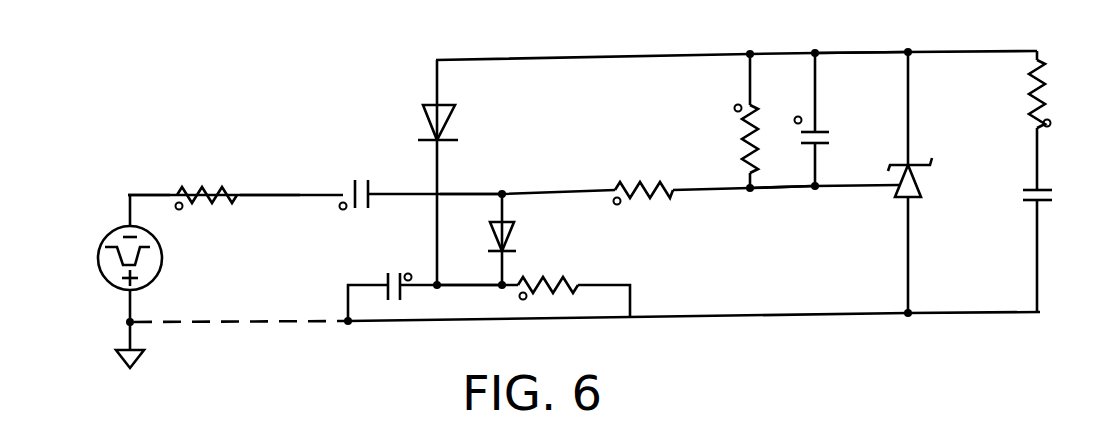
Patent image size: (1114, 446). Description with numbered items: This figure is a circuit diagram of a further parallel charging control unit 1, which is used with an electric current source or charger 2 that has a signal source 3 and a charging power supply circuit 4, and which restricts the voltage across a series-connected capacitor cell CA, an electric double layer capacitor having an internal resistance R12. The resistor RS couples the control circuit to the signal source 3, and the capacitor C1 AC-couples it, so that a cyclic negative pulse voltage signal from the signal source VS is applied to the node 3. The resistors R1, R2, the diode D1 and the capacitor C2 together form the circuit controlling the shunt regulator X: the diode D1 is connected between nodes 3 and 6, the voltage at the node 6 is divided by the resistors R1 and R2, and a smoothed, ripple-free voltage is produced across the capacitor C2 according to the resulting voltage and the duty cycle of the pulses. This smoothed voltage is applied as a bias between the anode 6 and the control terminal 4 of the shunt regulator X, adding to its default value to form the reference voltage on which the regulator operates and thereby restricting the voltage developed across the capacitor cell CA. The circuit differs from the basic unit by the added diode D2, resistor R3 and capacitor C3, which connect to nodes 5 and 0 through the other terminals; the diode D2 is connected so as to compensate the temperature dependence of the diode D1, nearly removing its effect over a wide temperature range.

The voltage source VS is at (123, 258).
The ground node 0 is at (151, 347).
The parallel charging control unit 1 is at (143, 178).
The electric current source (charger) 2 is at (270, 178).
The signal source 3 is at (470, 174).
The charging power supply circuit 4 is at (782, 173).
The node 5 is at (470, 270).
The node 6 is at (861, 35).
The resistor RS is at (207, 200).
The capacitor C1 is at (357, 181).
The diode D2 is at (419, 172).
The diode D1 is at (520, 239).
The capacitor C3 is at (382, 272).
The resistor R3 is at (574, 286).
The resistor R1 is at (664, 193).
The resistor R2 is at (727, 121).
The capacitor C2 is at (834, 119).
The shunt regulator X is at (939, 182).
The internal resistance R12 is at (1014, 120).
The capacitor cell CA is at (1051, 237).